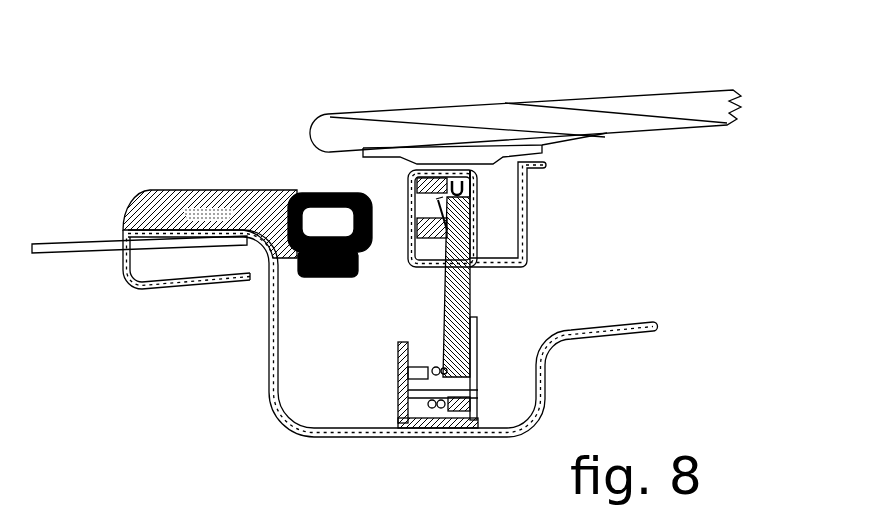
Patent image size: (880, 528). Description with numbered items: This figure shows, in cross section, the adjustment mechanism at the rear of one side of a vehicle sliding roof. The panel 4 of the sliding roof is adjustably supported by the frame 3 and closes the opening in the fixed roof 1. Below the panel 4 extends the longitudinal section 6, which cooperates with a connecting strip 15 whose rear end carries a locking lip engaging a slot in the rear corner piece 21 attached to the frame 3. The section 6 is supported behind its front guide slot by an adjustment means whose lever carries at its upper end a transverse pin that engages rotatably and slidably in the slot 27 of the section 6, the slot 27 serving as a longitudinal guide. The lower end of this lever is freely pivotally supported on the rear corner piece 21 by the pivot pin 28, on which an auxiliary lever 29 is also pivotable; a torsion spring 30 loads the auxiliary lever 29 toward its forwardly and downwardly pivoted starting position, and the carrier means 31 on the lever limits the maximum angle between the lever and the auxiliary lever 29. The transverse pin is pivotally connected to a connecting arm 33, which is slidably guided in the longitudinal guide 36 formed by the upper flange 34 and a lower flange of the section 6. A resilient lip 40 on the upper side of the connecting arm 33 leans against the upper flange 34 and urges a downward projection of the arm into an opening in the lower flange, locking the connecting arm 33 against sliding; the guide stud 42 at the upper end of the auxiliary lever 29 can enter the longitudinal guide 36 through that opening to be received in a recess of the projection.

The fixed roof 1 is at (95, 238).
The frame 3 is at (278, 397).
The panel 4 is at (666, 110).
The section 6 is at (398, 188).
The connecting strip 15 is at (527, 217).
The rear corner piece 21 is at (477, 340).
The slot 27 is at (480, 207).
The pivot pin 28 is at (463, 384).
The auxiliary lever 29 is at (467, 312).
The torsion spring 30 is at (437, 366).
The carrier means 31 is at (420, 388).
The connecting arm 33 is at (408, 192).
The upper flange 34 is at (470, 165).
The longitudinal guide 36 is at (427, 249).
The resilient lip 40 is at (408, 172).
The guide stud 42 is at (415, 250).